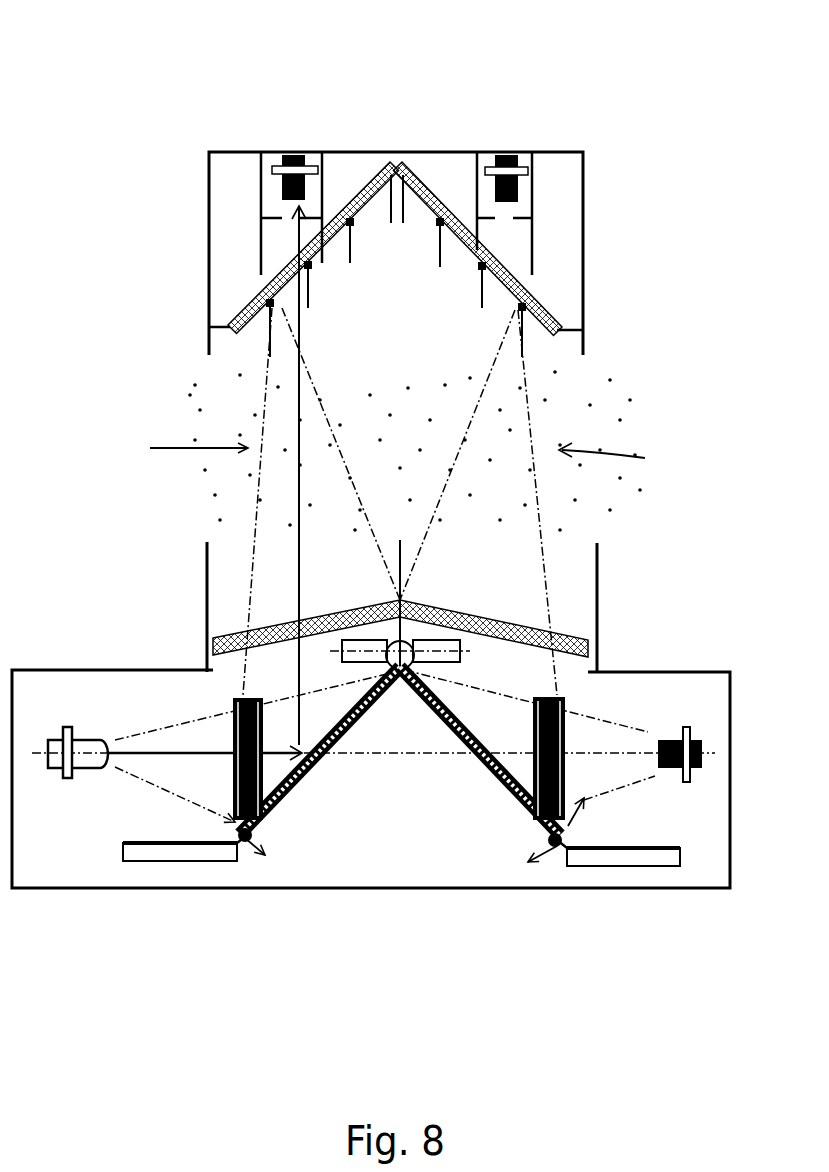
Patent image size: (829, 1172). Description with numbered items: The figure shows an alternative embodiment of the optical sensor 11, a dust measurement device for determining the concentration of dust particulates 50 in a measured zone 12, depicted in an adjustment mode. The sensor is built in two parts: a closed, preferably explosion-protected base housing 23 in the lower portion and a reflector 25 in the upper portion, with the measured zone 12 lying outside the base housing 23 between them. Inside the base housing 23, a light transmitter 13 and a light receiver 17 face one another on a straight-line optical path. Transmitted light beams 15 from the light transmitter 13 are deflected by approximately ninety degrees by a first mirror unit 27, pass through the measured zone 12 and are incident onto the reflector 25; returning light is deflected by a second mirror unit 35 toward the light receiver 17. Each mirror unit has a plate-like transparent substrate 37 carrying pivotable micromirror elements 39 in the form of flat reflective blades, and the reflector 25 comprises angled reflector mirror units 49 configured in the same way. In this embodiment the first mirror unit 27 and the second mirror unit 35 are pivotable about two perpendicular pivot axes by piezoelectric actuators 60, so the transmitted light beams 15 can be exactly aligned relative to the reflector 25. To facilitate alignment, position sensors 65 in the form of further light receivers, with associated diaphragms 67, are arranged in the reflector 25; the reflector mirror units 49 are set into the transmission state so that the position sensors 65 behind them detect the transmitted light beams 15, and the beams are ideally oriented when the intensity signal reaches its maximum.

The optical sensor 11 is at (648, 148).
The measured zone 12 is at (180, 452).
The light transmitter 13 is at (83, 757).
The transmitted light beams 15 is at (300, 556).
The light receiver 17 is at (673, 770).
The base housing 23 is at (645, 672).
The reflector 25 is at (357, 143).
The first mirror unit 27 is at (310, 773).
The second mirror unit 35 is at (503, 780).
The substrate 37 is at (440, 190).
The micromirror elements 39 is at (370, 182).
The reflector mirror units 49 is at (246, 318).
The dust particulates 50 is at (435, 451).
The piezoelectric actuators 60 is at (238, 716).
The position sensors 65 is at (525, 185).
The diaphragms 67 is at (275, 220).